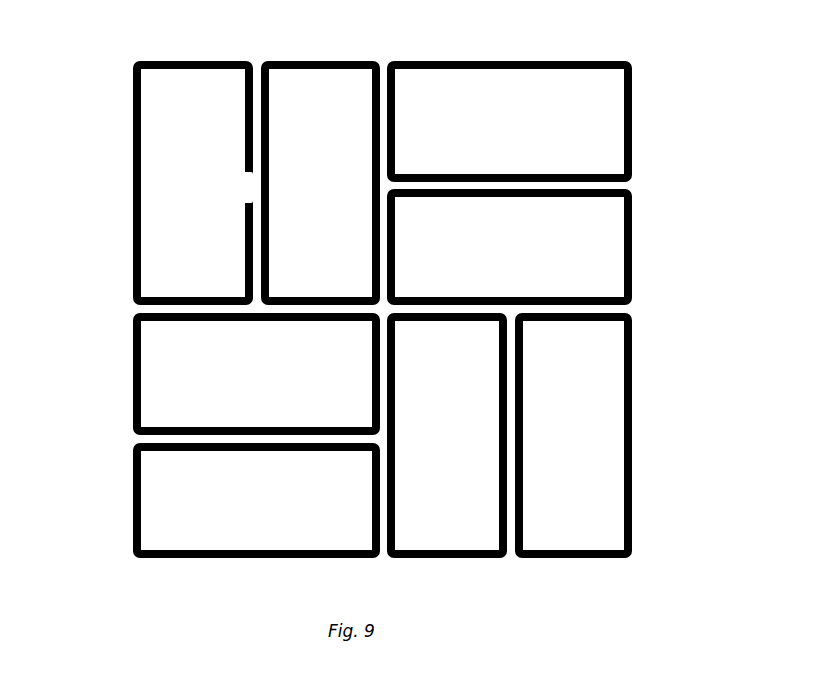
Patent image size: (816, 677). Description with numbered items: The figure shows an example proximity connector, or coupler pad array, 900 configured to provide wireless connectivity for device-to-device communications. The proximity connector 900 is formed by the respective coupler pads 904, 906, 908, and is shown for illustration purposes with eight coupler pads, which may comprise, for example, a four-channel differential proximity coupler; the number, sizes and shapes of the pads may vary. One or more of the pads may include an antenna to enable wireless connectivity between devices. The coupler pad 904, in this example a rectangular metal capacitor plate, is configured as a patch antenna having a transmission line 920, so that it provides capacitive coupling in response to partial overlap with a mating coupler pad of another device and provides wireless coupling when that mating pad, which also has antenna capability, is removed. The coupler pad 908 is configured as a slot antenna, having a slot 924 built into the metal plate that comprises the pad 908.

The proximity connector 900 is at (643, 155).
The coupler pad 904 is at (160, 145).
The coupler pad 906 is at (312, 78).
The coupler pad 908 is at (598, 361).
The transmission line 920 is at (223, 185).
The slot 924 is at (617, 427).